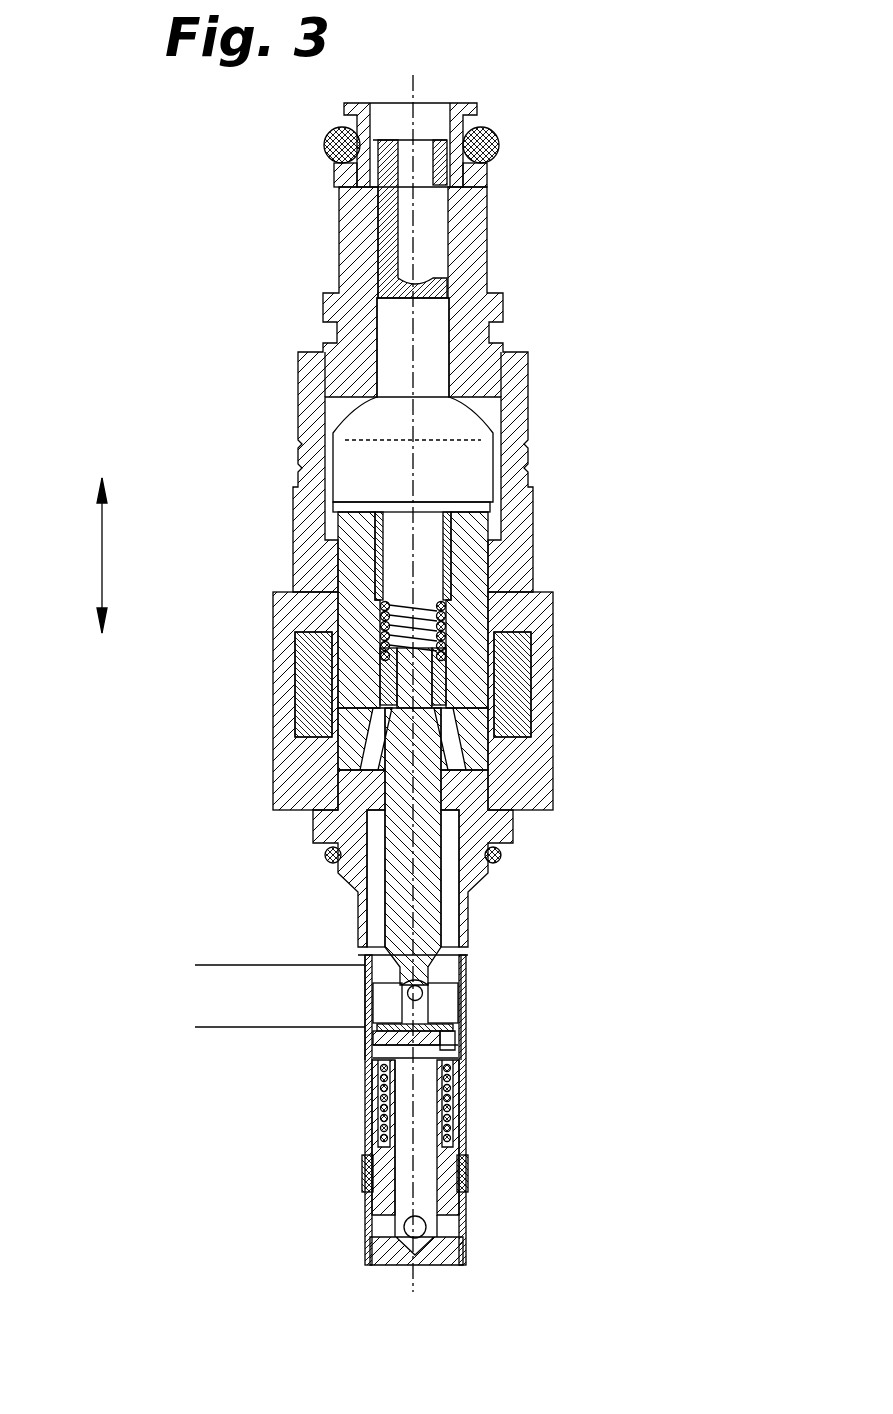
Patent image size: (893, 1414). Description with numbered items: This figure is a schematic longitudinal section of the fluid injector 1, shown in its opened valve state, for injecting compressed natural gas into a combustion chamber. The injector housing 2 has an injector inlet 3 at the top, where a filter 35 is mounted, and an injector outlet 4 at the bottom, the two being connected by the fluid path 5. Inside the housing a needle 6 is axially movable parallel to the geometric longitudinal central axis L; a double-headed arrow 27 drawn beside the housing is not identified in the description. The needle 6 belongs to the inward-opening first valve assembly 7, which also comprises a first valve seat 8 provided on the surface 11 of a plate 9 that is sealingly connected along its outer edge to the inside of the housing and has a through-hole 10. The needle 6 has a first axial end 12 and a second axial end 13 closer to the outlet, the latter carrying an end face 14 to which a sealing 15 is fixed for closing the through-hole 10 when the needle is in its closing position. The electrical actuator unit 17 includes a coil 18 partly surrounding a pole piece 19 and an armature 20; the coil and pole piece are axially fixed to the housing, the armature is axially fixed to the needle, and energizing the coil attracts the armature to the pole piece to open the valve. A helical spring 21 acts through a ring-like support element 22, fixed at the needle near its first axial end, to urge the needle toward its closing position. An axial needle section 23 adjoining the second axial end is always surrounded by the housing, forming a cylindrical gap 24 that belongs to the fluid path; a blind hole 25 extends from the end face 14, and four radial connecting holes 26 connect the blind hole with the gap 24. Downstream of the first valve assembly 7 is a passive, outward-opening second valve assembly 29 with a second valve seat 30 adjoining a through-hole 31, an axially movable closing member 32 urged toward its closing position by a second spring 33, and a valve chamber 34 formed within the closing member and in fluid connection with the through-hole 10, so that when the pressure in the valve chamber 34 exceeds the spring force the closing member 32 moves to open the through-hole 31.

The fluid injector 1 is at (288, 182).
The geometric longitudinal central axis L is at (407, 88).
The injector housing 2 is at (482, 830).
The injector inlet 3 is at (428, 115).
The injector outlet 4 is at (455, 1060).
The fluid path 5 is at (452, 888).
The needle 6 is at (405, 868).
The first valve assembly 7 is at (690, 586).
The first valve seat 8 is at (447, 1027).
The plate 9 is at (453, 1030).
The through-hole 10 is at (447, 1042).
The surface 11 is at (445, 985).
The first axial end 12 is at (430, 668).
The second axial end 13 is at (373, 1003).
The end face 14 is at (380, 1048).
The sealing 15 is at (375, 1040).
The electrical actuator unit 17 is at (190, 595).
The coil 18 is at (315, 650).
The pole piece 19 is at (355, 625).
The armature 20 is at (355, 758).
The spring 21 is at (385, 618).
The ring-like support element 22 is at (447, 688).
The axial needle section 23 is at (193, 965).
The gap 24 is at (455, 995).
The blind hole 25 is at (402, 1075).
The connecting holes 26 is at (370, 995).
The stroke direction 27 is at (102, 555).
The second valve assembly 29 is at (193, 1060).
The second valve seat 30 is at (375, 1250).
The through-hole 31 is at (447, 1225).
The closing member 32 is at (440, 1168).
The second spring 33 is at (450, 1105).
The valve chamber 34 is at (432, 1200).
The filter 35 is at (385, 240).